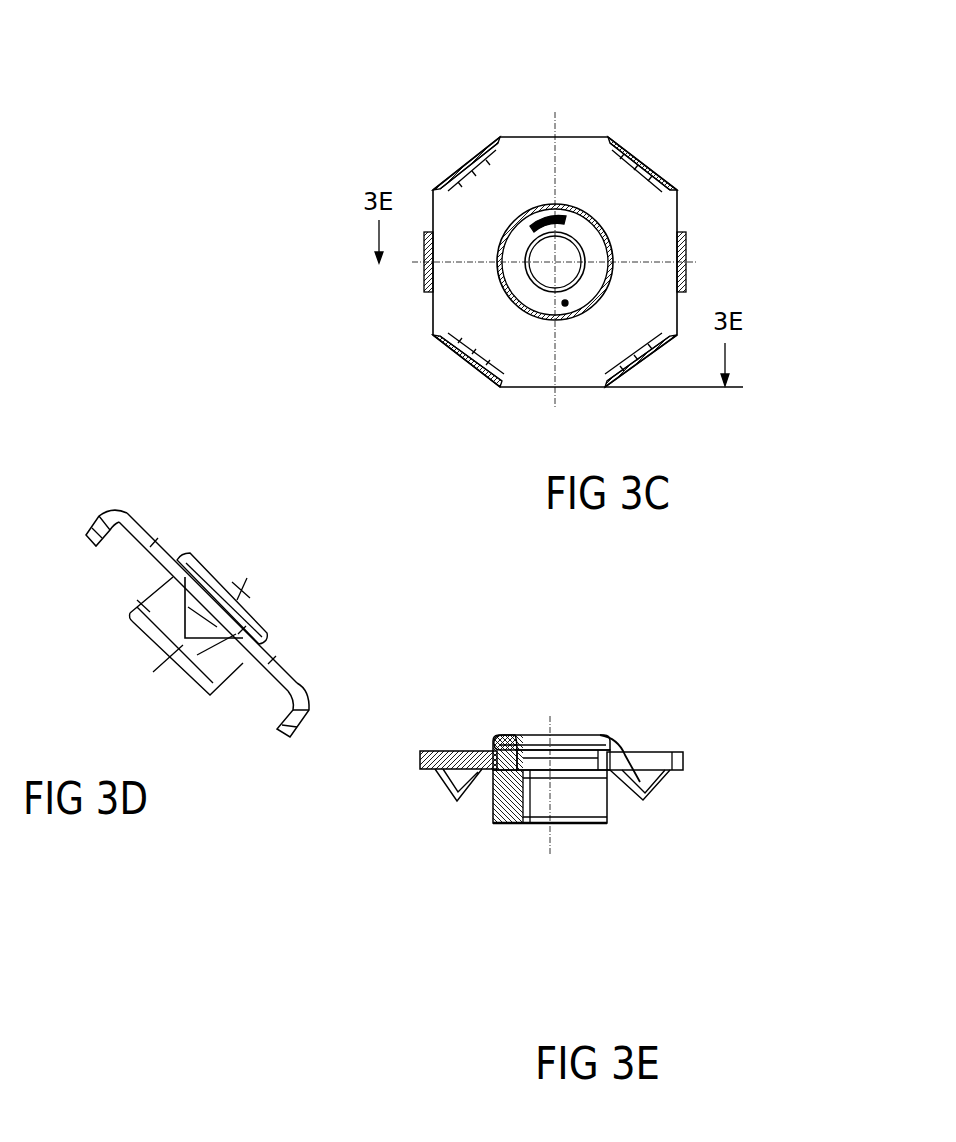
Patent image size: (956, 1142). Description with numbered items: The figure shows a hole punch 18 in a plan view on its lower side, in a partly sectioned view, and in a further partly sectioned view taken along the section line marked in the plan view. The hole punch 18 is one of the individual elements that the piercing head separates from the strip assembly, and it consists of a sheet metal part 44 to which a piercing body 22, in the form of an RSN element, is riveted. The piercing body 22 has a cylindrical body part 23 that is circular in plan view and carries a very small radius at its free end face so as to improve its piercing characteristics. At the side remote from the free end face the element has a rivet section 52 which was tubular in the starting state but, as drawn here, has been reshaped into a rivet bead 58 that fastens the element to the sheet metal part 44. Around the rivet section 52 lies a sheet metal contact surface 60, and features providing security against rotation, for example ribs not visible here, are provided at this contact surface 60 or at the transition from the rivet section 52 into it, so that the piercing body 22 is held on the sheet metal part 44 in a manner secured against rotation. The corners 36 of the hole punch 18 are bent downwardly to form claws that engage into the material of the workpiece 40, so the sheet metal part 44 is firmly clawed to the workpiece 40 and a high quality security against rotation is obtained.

In FIG. 3D, the hole punch 18 is at (174, 518).
In FIG. 3C, the piercing body 22 is at (572, 213).
In FIG. 3D, the piercing body 22 is at (215, 667).
In FIG. 3D, the cylindrical body part 23 is at (143, 605).
In FIG. 3C, the corners 36 is at (643, 149).
In FIG. 3E, the corners 36 is at (668, 778).
In FIG. 3C, the workpiece 40 is at (647, 247).
In FIG. 3C, the sheet metal part 44 is at (463, 305).
In FIG. 3D, the rivet section 52 is at (253, 607).
In FIG. 3E, the rivet section 52 is at (510, 752).
In FIG. 3E, the rivet bead 58 is at (510, 757).
In FIG. 3E, the sheet metal contact surface 60 is at (492, 770).